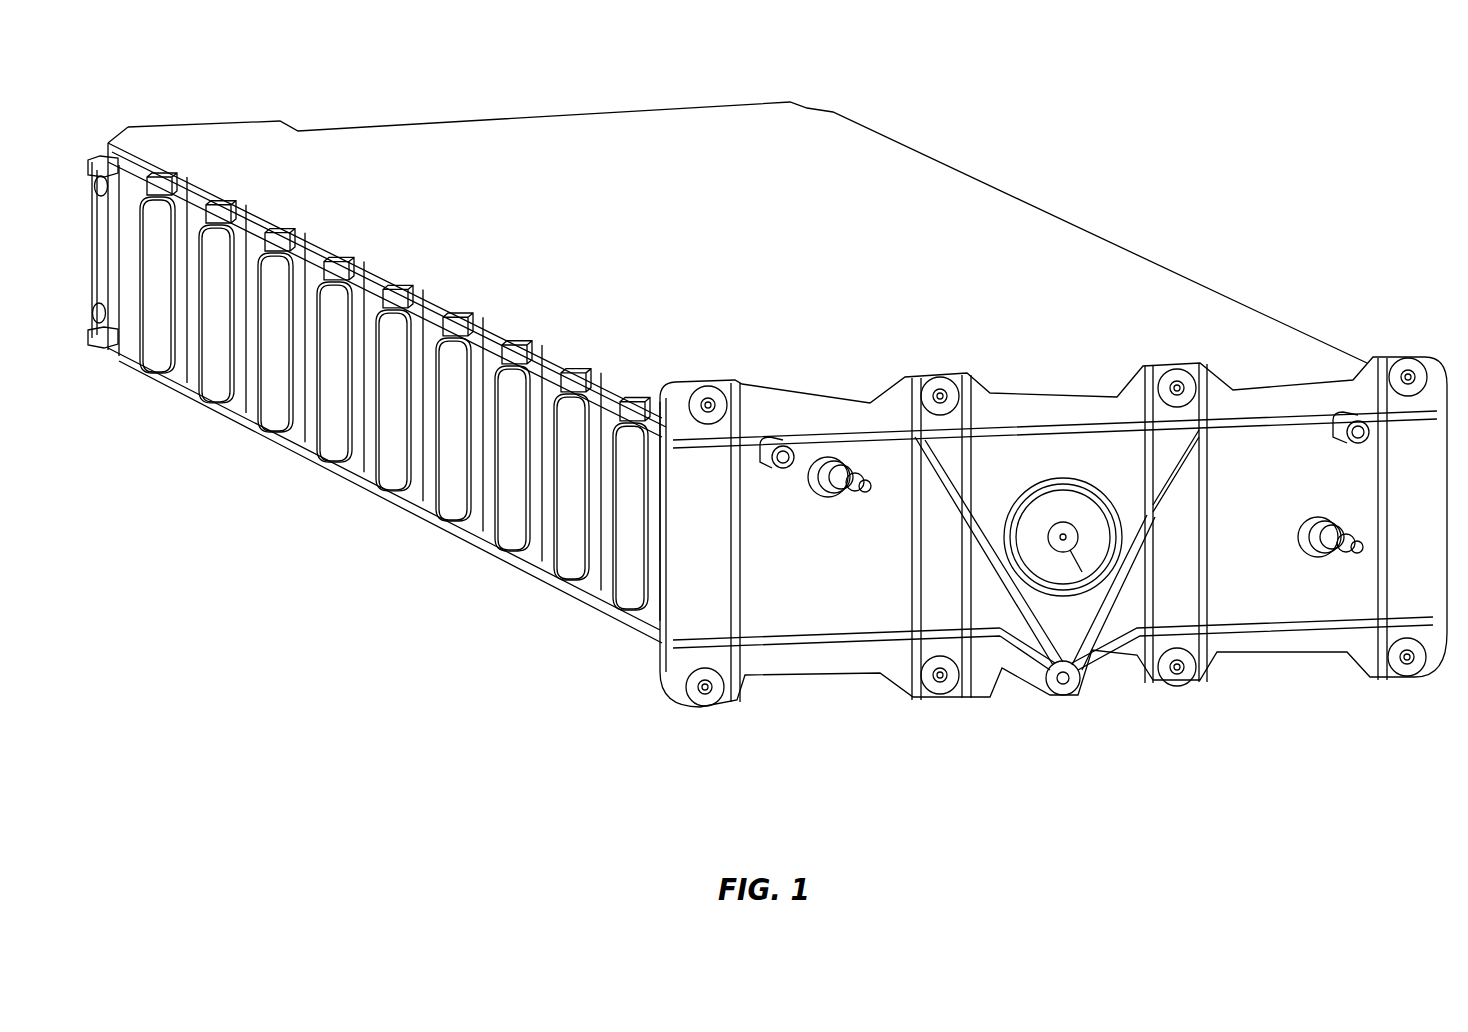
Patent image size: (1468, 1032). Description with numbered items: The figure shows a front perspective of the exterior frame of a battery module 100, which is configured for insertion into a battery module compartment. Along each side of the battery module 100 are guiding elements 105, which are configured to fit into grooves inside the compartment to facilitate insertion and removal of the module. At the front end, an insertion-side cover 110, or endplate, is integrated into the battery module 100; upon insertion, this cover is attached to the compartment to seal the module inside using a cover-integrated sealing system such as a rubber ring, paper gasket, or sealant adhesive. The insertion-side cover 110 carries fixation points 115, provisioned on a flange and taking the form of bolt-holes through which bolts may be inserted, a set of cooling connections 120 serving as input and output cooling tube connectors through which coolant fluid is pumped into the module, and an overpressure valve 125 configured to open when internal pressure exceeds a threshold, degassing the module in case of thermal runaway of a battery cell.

The battery module 100 is at (1350, 108).
The guiding elements 105 is at (452, 408).
The insertion-side cover 110 is at (1248, 493).
The fixation points 115 is at (702, 687).
The cooling connections 120 is at (1357, 548).
The overpressure valve 125 is at (1063, 535).